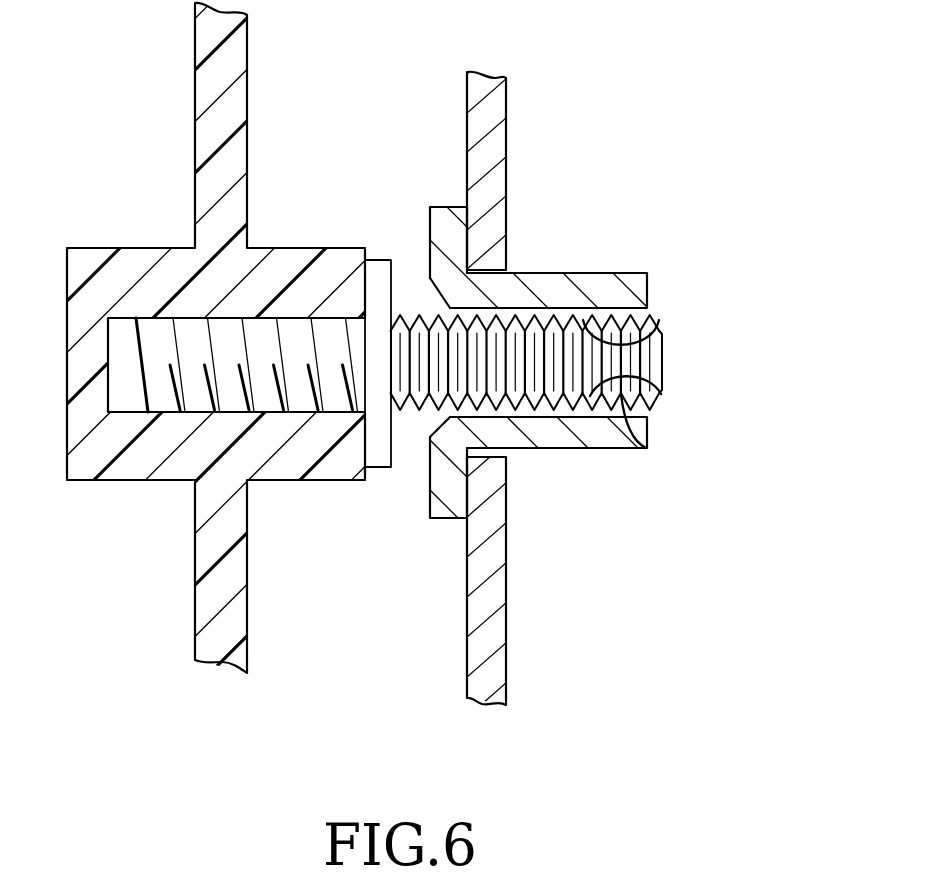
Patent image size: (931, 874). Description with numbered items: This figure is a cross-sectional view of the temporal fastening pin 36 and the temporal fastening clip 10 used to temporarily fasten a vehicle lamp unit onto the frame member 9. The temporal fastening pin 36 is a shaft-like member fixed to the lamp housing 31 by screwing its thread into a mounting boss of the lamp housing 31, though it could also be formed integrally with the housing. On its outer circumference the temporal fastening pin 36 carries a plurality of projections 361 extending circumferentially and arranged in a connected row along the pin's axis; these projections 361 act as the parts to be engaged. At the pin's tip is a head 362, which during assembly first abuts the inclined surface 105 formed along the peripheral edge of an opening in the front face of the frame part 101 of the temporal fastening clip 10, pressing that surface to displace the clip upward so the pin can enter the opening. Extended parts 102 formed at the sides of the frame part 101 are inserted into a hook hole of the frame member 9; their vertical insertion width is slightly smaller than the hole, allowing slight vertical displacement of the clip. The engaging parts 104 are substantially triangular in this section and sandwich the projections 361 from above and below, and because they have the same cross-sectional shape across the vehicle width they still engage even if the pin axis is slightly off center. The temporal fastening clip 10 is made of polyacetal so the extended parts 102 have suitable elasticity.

The frame member 9 is at (508, 667).
The temporal fastening clip 10 is at (465, 360).
The lamp housing 31 is at (195, 155).
The temporal fastening pin 36 is at (614, 313).
The frame part 101 is at (453, 207).
The extended parts 102 is at (550, 273).
The engaging parts 104 is at (659, 320).
The inclined surface 105 is at (433, 297).
The projections 361 is at (622, 475).
The head 362 is at (662, 353).